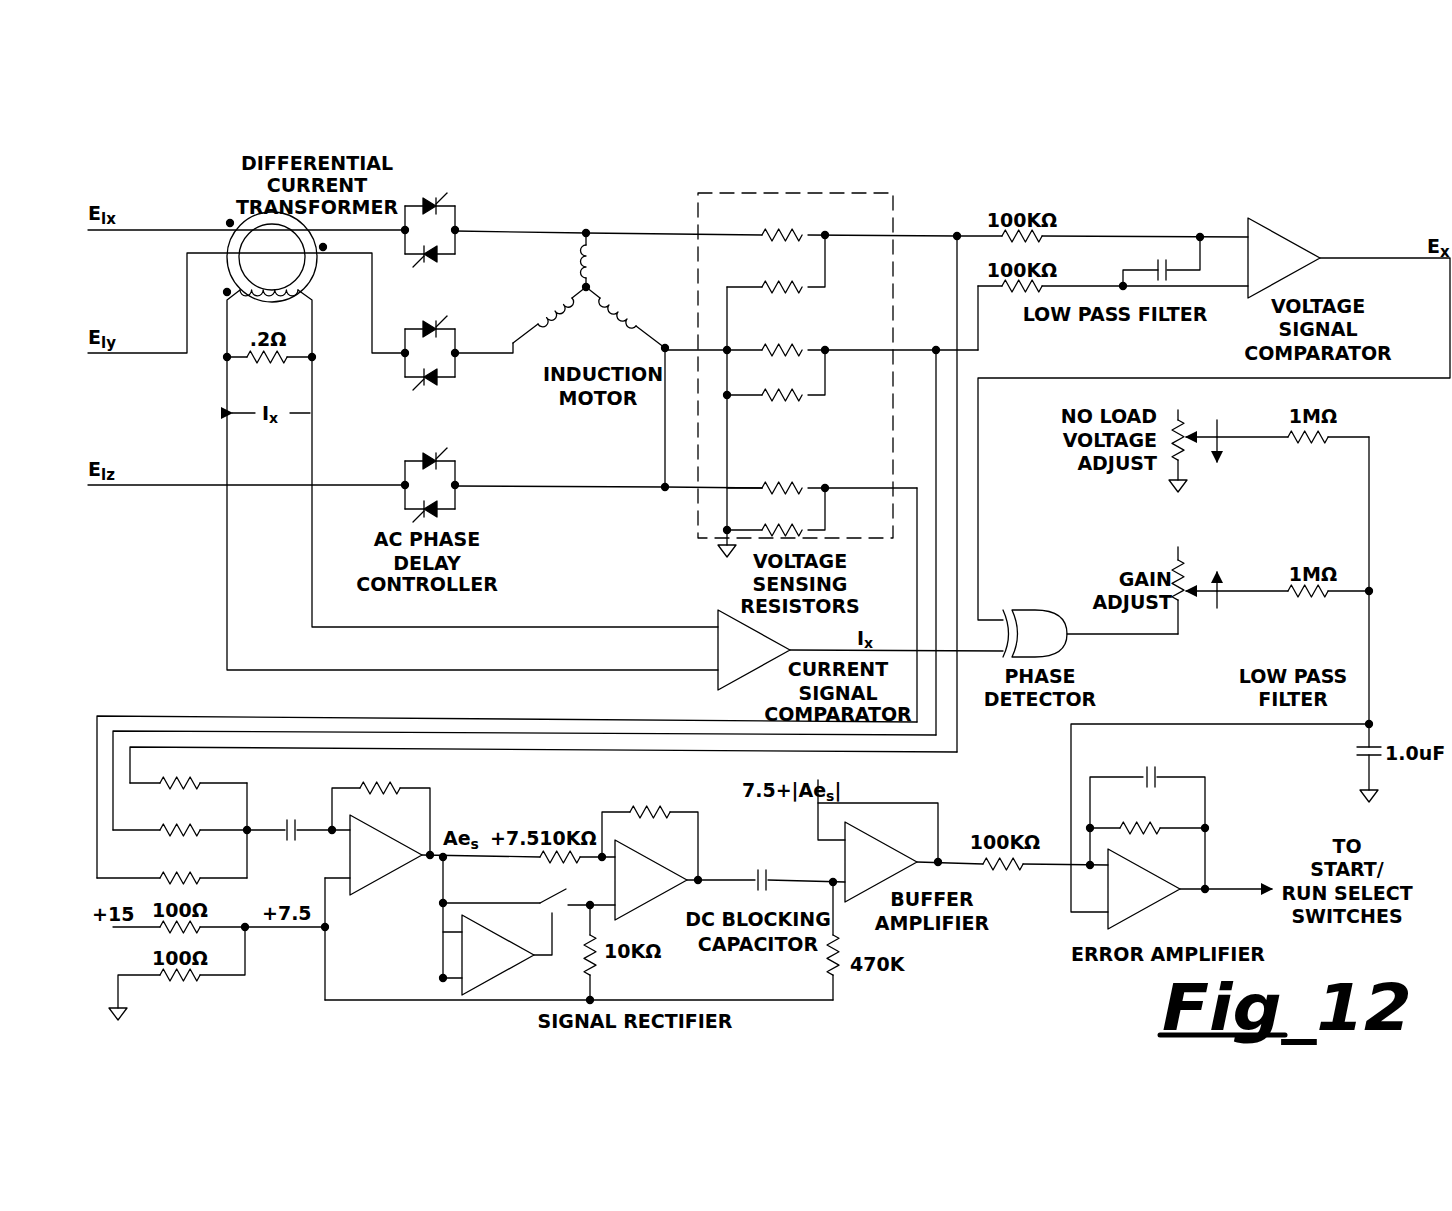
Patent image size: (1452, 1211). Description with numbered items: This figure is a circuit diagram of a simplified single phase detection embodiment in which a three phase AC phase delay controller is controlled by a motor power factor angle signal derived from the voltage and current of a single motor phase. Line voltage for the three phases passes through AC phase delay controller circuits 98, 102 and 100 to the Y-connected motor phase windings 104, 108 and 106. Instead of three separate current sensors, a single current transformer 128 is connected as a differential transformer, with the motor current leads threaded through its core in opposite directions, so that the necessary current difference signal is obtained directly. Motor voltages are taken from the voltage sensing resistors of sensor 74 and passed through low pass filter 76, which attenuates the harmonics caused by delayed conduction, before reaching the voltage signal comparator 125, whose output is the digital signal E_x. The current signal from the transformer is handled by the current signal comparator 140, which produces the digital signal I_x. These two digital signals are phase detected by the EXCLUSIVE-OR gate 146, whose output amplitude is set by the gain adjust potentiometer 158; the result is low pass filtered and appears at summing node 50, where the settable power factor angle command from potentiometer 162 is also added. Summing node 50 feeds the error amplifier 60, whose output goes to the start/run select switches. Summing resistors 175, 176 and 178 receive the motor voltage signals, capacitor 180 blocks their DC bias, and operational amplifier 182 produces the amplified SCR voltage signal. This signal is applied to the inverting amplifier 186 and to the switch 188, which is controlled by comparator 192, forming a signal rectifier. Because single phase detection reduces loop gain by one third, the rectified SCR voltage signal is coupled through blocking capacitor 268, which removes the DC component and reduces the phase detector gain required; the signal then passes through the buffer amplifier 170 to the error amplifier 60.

The current transformer 128 is at (233, 259).
The AC phase delay controller circuit 98 is at (462, 200).
The AC phase delay controller circuit 102 is at (456, 330).
The AC phase delay controller circuit 100 is at (462, 455).
The motor phase winding 104 is at (592, 248).
The motor phase winding 106 is at (626, 306).
The motor phase winding 108 is at (532, 308).
The motor voltage sensor 74 is at (905, 210).
The low pass filter 76 is at (1160, 232).
The differential comparator 125 is at (1290, 242).
The current signal comparator 140 is at (718, 620).
The EXCLUSIVE-OR gate 146 is at (1027, 606).
The potentiometer 158 is at (1178, 574).
The potentiometer 162 is at (1192, 438).
The summing node 50 is at (1372, 591).
The summing resistor 175 is at (200, 782).
The summing resistor 176 is at (200, 836).
The summing resistor 178 is at (170, 880).
The capacitor 180 is at (300, 836).
The operational amplifier 182 is at (398, 844).
The inverting amplifier 186 is at (644, 872).
The MOSFET switch 188 is at (563, 904).
The comparator 192 is at (457, 954).
The blocking capacitor 268 is at (756, 876).
The amplifier 170 is at (886, 846).
The error amplifier 60 is at (1106, 920).